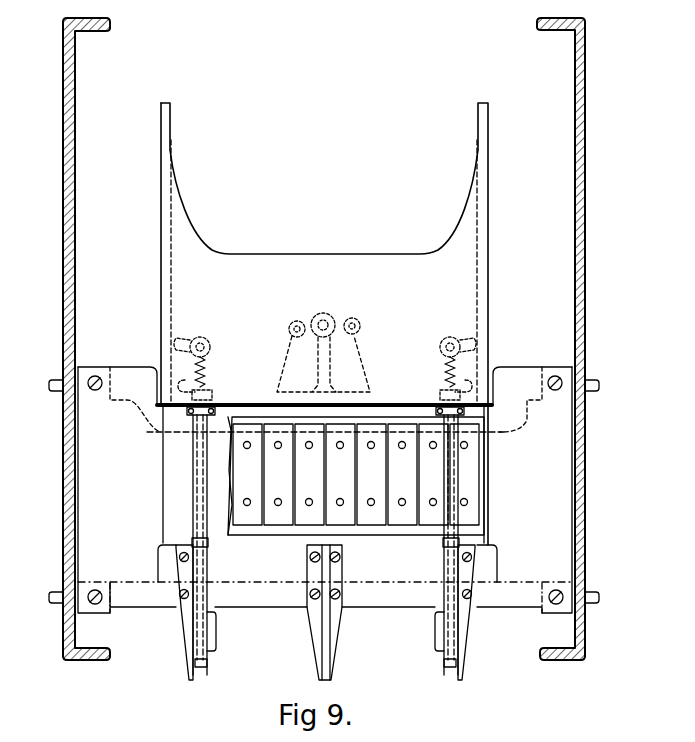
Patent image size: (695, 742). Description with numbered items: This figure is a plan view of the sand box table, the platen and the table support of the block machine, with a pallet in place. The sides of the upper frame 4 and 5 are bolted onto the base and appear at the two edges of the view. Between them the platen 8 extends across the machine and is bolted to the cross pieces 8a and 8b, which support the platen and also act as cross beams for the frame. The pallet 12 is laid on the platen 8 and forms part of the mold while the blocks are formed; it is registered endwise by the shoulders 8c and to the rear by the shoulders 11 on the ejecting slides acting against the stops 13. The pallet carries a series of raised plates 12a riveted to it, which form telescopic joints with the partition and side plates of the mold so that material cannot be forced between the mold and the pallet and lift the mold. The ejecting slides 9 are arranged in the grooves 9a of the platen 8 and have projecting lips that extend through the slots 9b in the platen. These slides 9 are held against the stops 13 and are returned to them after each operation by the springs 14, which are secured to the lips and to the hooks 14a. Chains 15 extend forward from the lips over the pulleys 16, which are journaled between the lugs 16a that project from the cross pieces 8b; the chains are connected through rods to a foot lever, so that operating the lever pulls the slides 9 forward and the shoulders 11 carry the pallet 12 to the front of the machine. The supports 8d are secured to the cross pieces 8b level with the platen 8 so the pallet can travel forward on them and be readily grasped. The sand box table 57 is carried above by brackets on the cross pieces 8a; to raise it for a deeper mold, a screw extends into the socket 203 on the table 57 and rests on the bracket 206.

The upper frame side 4 is at (586, 247).
The upper frame side 5 is at (66, 270).
The sand box table 57 is at (324, 324).
The platen 8 is at (325, 490).
The cross piece 8a is at (135, 383).
The cross piece 8b is at (146, 607).
The shoulder 8c is at (163, 452).
The support 8d is at (183, 615).
The ejecting slide 9 is at (199, 521).
The groove 9a is at (193, 487).
The slot 9b is at (458, 541).
The shoulder 11 is at (189, 415).
The pallet 12 is at (483, 505).
The raised plate 12a is at (498, 458).
The stop 13 is at (200, 407).
The spring 14 is at (205, 369).
The hook 14a is at (207, 340).
The chain 15 is at (207, 572).
The pulley 16 is at (208, 665).
The lug 16a is at (217, 630).
The socket 203 is at (350, 322).
The bracket 206 is at (347, 372).